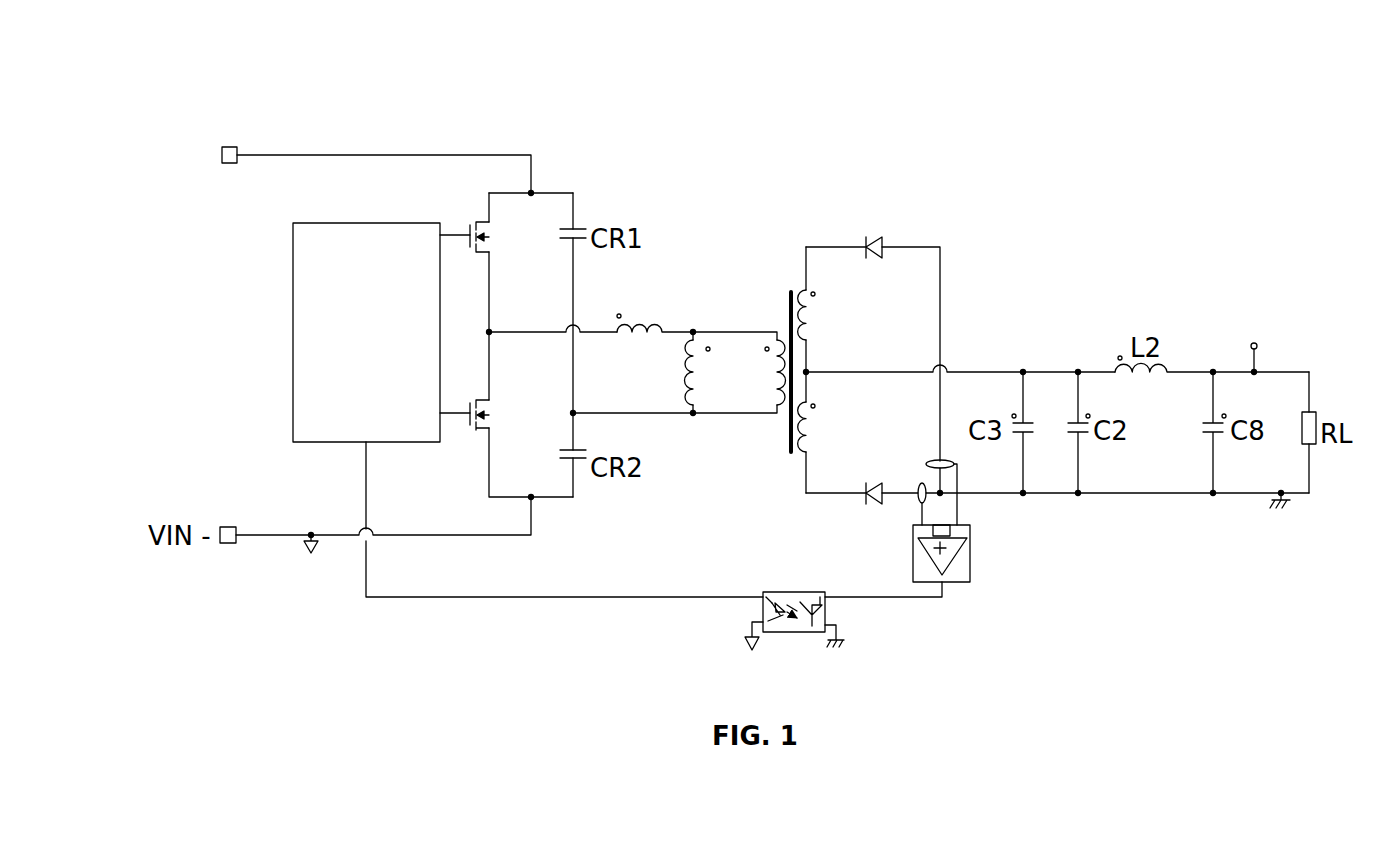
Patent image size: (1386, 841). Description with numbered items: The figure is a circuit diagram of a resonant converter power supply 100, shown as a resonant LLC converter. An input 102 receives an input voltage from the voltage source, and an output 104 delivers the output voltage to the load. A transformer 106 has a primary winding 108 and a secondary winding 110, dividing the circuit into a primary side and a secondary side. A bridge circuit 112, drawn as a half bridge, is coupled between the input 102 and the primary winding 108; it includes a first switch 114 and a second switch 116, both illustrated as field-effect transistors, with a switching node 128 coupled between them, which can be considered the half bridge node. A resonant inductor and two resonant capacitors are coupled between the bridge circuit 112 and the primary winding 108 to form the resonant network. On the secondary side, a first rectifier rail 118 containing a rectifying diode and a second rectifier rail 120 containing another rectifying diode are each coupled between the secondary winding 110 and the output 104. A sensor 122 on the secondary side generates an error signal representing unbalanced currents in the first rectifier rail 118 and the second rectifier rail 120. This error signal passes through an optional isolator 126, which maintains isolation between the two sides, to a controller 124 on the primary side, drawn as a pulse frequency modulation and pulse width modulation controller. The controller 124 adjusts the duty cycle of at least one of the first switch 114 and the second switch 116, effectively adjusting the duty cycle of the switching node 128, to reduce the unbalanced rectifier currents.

The resonant converter power supply 100 is at (256, 57).
The input 102 is at (237, 147).
The output 104 is at (1256, 343).
The transformer 106 is at (794, 284).
The primary winding 108 is at (774, 393).
The secondary winding 110 is at (796, 458).
The bridge circuit 112 is at (516, 333).
The first switch 114 is at (497, 245).
The second switch 116 is at (497, 418).
The first rectifier rail 118 is at (825, 495).
The second rectifier rail 120 is at (940, 247).
The sensor 122 is at (970, 550).
The controller 124 is at (293, 272).
The isolator 126 is at (793, 634).
The switching node 128 is at (492, 330).